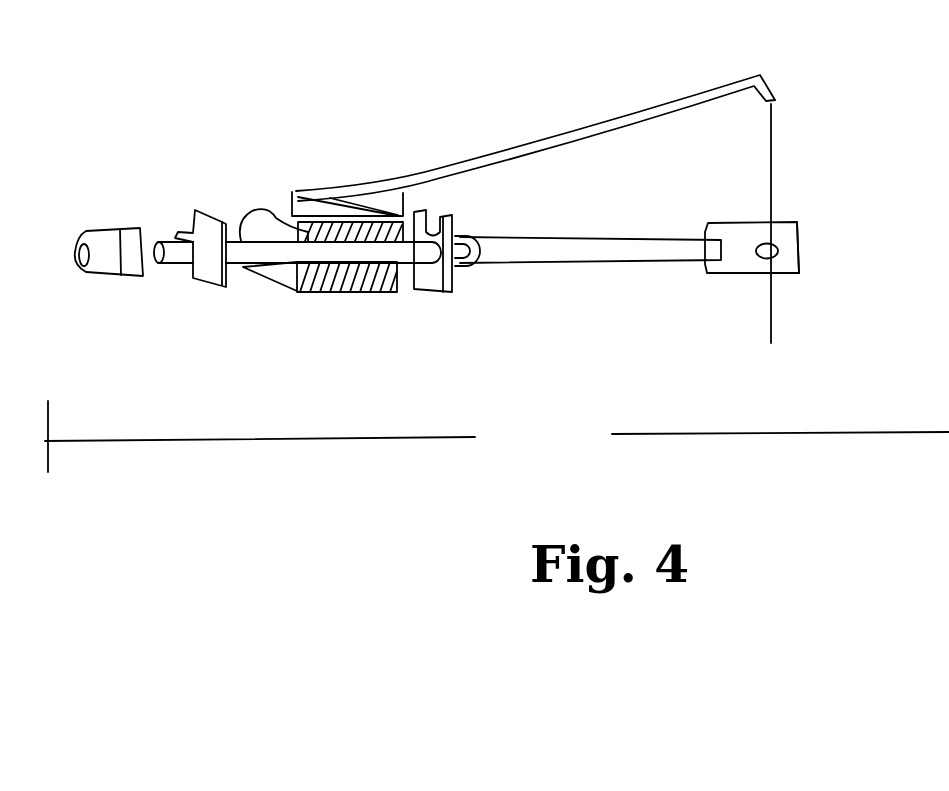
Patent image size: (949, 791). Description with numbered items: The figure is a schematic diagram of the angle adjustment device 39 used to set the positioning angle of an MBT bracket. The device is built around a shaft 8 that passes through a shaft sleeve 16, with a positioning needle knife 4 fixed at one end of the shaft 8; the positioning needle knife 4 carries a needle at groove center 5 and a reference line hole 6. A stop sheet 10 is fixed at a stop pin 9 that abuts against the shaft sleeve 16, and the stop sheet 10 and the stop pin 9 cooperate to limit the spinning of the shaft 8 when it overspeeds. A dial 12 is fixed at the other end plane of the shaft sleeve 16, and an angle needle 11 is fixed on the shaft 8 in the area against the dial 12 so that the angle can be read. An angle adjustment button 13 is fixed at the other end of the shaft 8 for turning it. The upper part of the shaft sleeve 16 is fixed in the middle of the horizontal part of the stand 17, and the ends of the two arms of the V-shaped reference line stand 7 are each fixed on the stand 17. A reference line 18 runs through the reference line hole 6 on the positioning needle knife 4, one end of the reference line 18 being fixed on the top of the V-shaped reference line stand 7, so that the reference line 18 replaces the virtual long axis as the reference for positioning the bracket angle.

The positioning needle knife 4 is at (725, 224).
The needle at groove center 5 is at (797, 245).
The reference line hole 6 is at (778, 251).
The reference line stand 7 is at (376, 186).
The shaft 8 is at (622, 247).
The stop pin 9 is at (403, 230).
The stop sheet 10 is at (443, 225).
The angle needle 11 is at (205, 210).
The dial 12 is at (263, 227).
The angle adjustment button 13 is at (122, 233).
The shaft sleeve 16 is at (365, 292).
The stand 17 is at (300, 191).
The reference line 18 is at (772, 170).
The angle adjustment device 39 is at (497, 436).